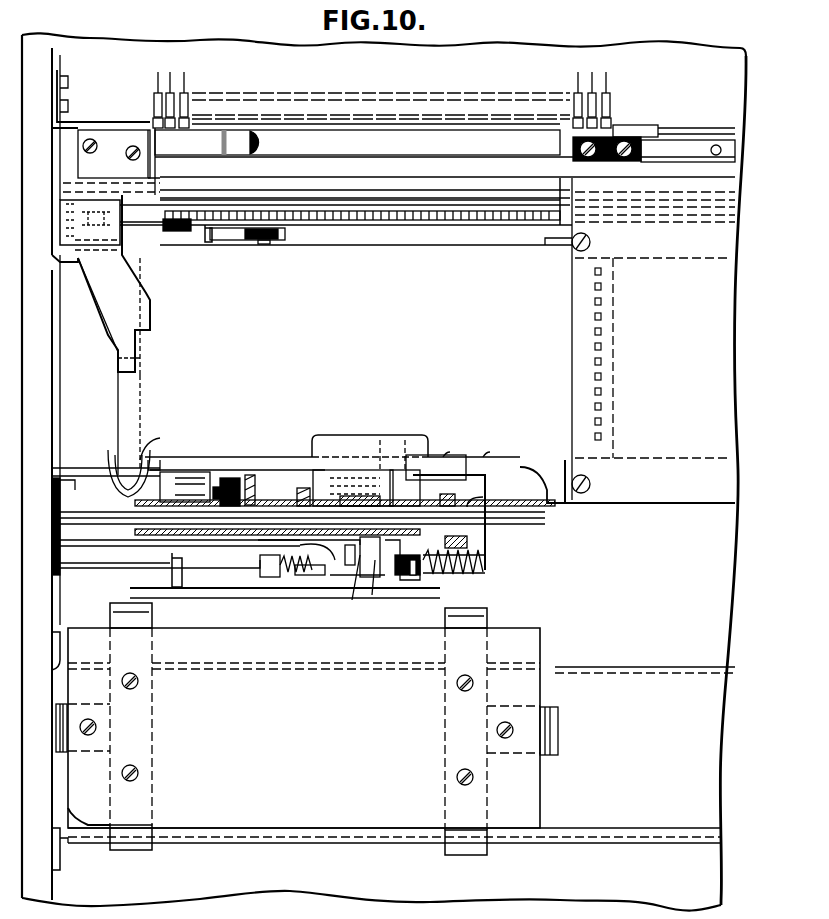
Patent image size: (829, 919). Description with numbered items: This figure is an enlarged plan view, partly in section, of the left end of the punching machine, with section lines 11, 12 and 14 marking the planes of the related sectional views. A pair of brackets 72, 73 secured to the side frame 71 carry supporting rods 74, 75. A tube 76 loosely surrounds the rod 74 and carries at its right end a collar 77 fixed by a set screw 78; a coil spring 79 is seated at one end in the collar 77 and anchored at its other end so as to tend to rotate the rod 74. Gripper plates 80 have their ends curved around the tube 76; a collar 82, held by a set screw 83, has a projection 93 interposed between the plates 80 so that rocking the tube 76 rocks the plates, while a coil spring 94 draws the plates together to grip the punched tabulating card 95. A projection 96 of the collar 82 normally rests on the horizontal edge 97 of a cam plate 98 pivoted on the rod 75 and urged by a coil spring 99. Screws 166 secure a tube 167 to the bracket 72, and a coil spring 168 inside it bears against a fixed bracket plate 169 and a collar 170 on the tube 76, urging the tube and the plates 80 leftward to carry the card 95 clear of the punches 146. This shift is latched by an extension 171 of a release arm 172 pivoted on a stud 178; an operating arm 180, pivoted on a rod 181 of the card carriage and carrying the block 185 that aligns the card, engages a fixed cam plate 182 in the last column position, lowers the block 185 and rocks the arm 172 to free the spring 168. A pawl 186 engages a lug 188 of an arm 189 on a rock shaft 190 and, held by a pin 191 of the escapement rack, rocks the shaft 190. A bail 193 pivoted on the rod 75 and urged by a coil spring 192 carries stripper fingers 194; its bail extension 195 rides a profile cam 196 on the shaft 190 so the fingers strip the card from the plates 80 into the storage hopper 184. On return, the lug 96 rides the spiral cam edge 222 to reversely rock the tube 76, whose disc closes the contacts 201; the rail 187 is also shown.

The section line 11 is at (25, 55).
The section line 12 is at (68, 608).
The section line 14 is at (272, 413).
The side frame 71 is at (520, 480).
The bracket 72 is at (55, 495).
The bracket 73 is at (485, 555).
The supporting rod 74 is at (120, 521).
The supporting rod 75 is at (145, 548).
The tube 76 is at (450, 452).
The collar 77 is at (490, 452).
The set screw 78 is at (467, 540).
The coil spring 79 is at (483, 497).
The gripper plates 80 is at (337, 440).
The collar 82 is at (352, 588).
The set screw 83 is at (370, 558).
The projection 93 is at (408, 435).
The coil spring 94 is at (330, 548).
The punched tabulating card 95 is at (308, 862).
The projection 96 is at (400, 580).
The horizontal edge 97 is at (380, 587).
The cam plate 98 is at (312, 562).
The coil spring 99 is at (345, 585).
The punches 146 is at (593, 395).
The screws 166 is at (78, 455).
The tube 167 is at (165, 535).
The coil spring 168 is at (180, 570).
The bracket plate 169 is at (232, 478).
The collar 170 is at (155, 430).
The extension 171 is at (130, 455).
The release arm 172 is at (130, 390).
The stud 178 is at (165, 455).
The operating arm 180 is at (125, 302).
The rod 181 is at (160, 213).
The cam plate 182 is at (58, 256).
The storage hopper 184 is at (72, 825).
The block 185 is at (140, 320).
The pawl 186 is at (158, 234).
The rail 187 is at (329, 912).
The lug 188 is at (205, 242).
The arm 189 is at (232, 240).
The rock shaft 190 is at (265, 244).
The pin 191 is at (200, 210).
The coil spring 192 is at (470, 578).
The bail 193 is at (340, 588).
The stripper fingers 194 is at (195, 573).
The bail extension 195 is at (270, 577).
The profile cam 196 is at (252, 475).
The contacts 201 is at (228, 487).
The cam edge 222 is at (383, 435).